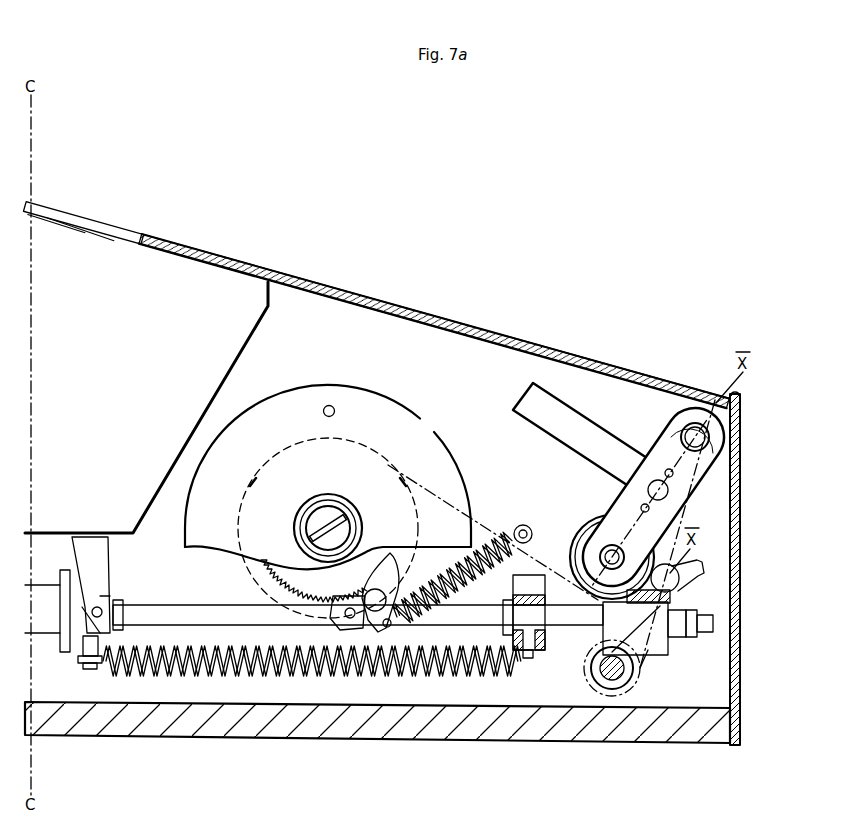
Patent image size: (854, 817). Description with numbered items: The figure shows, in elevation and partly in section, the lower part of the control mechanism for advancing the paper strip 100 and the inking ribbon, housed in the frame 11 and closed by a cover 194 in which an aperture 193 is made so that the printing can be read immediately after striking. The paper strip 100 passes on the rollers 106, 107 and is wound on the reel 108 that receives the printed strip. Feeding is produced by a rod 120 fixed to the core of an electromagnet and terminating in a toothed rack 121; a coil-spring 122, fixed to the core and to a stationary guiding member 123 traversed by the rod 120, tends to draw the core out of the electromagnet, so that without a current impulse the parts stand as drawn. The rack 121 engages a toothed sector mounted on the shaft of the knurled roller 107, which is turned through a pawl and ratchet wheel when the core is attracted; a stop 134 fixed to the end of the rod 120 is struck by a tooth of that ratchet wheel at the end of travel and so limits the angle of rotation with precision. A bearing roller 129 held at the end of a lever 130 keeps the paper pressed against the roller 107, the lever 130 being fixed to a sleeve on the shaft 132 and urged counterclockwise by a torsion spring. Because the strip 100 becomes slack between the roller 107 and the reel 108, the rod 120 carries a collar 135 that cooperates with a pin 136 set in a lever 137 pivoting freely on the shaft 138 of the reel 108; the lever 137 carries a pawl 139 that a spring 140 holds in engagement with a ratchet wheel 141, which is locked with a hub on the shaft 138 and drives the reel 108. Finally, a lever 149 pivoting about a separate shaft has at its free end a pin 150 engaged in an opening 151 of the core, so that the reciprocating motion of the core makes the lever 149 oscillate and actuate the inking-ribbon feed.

The frame 11 is at (218, 356).
The paper strip 100 is at (481, 521).
The roller 106 is at (723, 428).
The roller 107 is at (590, 522).
The reel 108 is at (326, 395).
The rod 120 is at (160, 613).
The toothed rack 121 is at (665, 647).
The coil-spring 122 is at (195, 667).
The stationary guiding member 123 is at (542, 652).
The bearing roller 129 is at (700, 570).
The lever 130 is at (643, 668).
The shaft 132 is at (613, 690).
The stop 134 is at (683, 617).
The collar 135 is at (377, 670).
The pin 136 is at (348, 618).
The lever 137 is at (335, 608).
The shaft 138 is at (323, 518).
The pawl 139 is at (390, 582).
The spring 140 is at (462, 598).
The ratchet wheel 141 is at (293, 572).
The lever 149 is at (97, 555).
The pin 150 is at (72, 652).
The opening 151 is at (98, 668).
The aperture 193 is at (93, 187).
The cover 194 is at (444, 286).